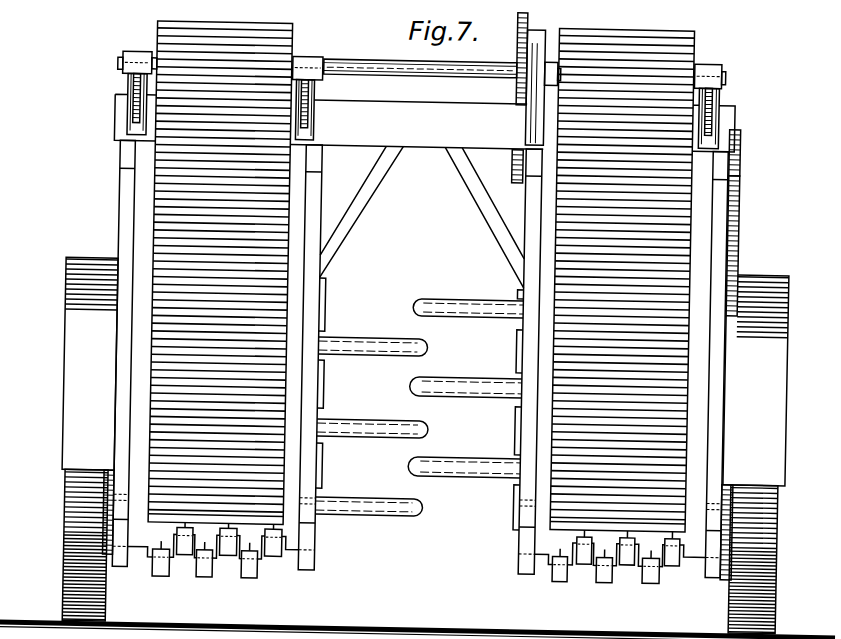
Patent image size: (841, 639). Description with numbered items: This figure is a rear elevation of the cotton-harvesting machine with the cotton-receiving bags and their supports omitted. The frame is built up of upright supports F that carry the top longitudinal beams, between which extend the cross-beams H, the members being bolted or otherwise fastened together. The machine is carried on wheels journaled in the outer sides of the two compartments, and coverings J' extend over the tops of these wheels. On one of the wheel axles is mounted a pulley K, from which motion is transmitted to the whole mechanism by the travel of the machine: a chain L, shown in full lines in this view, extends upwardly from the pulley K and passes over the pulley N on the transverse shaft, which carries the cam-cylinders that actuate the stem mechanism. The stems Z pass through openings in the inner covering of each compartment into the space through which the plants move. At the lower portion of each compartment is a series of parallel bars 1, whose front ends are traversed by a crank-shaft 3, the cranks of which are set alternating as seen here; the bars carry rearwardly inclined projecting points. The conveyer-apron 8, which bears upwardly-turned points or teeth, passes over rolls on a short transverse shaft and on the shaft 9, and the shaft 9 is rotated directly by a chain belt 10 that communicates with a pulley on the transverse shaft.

The parallel bars 1 is at (416, 562).
The crank-shaft 3 is at (416, 557).
The conveyer-apron 8 is at (421, 276).
The shaft 9 is at (421, 91).
The chain belt 10 is at (529, 93).
The upright supports F is at (413, 336).
The cross-beams H is at (416, 194).
The coverings J' is at (425, 371).
The pulley K is at (420, 551).
The chain L is at (738, 226).
The pulley N is at (742, 153).
The stems Z is at (419, 407).